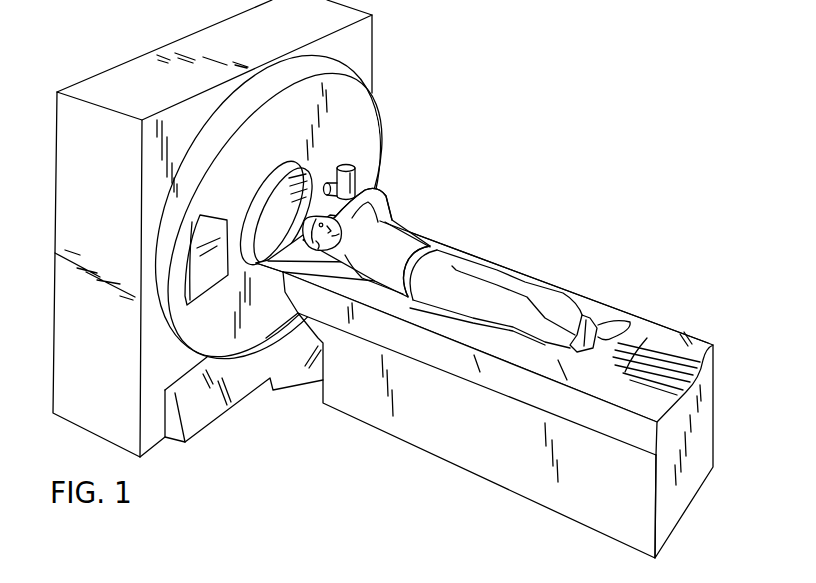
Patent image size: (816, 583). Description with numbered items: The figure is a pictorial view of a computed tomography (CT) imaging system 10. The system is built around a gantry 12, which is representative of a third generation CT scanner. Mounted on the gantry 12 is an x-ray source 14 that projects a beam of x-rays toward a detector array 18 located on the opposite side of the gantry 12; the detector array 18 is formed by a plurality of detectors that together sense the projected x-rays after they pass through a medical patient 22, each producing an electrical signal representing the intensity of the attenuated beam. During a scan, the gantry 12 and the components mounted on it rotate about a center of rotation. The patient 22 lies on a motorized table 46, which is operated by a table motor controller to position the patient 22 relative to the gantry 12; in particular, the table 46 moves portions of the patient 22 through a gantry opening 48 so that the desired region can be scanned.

The computed tomography (CT) imaging system 10 is at (478, 116).
The gantry 12 is at (362, 136).
The x-ray source 14 is at (356, 180).
The detector array 18 is at (202, 284).
The medical patient 22 is at (406, 246).
The motorized table 46 is at (485, 461).
The gantry opening 48 is at (265, 205).